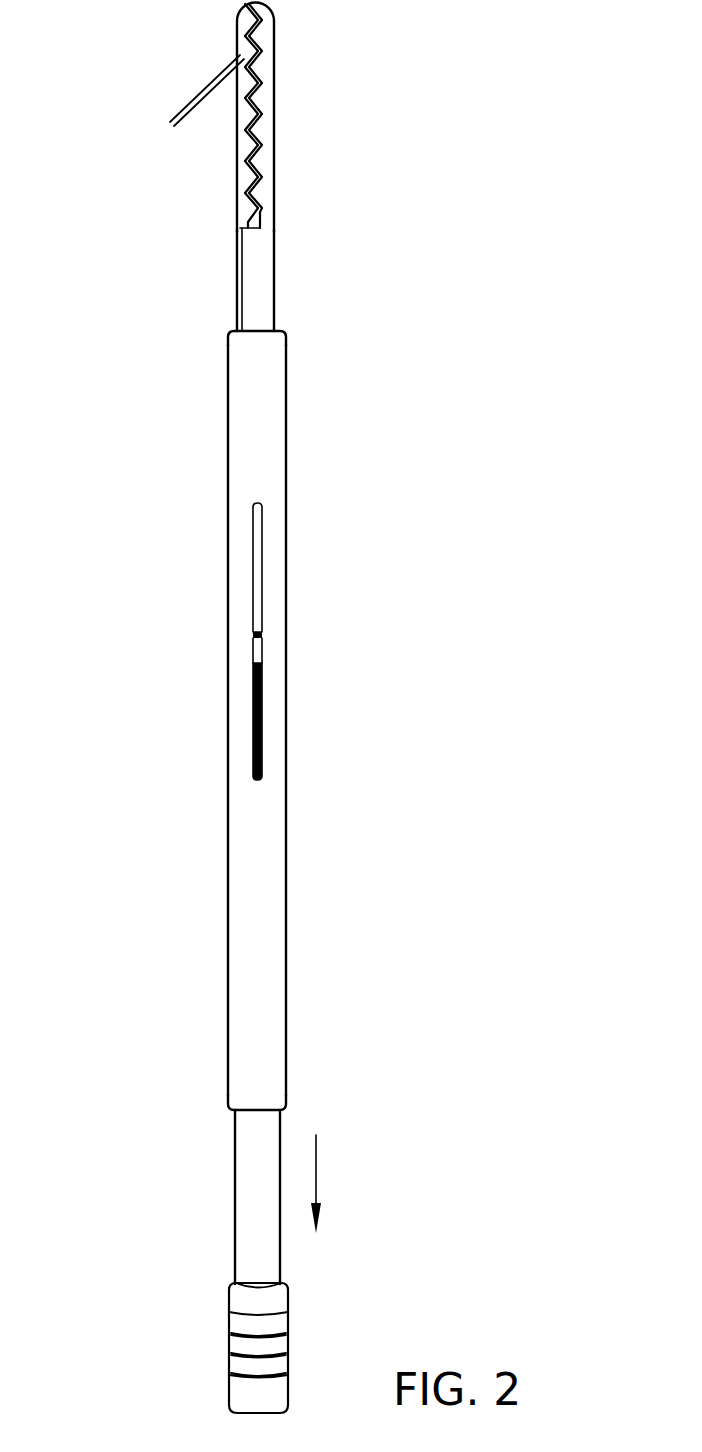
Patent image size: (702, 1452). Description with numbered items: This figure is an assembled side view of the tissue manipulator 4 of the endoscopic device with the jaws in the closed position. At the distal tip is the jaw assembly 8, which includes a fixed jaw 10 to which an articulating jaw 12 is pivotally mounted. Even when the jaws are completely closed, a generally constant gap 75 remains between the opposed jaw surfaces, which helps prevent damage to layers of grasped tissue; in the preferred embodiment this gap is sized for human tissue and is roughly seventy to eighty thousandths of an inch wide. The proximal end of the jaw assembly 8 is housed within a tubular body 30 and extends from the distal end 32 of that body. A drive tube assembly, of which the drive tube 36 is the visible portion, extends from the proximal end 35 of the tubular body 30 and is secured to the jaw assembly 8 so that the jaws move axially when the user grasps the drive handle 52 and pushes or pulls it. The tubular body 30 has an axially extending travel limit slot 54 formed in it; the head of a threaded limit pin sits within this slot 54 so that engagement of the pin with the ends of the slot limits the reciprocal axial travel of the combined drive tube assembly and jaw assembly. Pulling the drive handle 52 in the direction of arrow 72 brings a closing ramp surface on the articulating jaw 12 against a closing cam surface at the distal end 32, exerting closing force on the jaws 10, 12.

The tissue manipulator 4 is at (346, 510).
The jaw assembly 8 is at (289, 120).
The fixed jaw 10 is at (284, 276).
The articulating jaw 12 is at (235, 203).
The tubular body 30 is at (300, 449).
The distal end of the tubular body 32 is at (228, 384).
The proximal end of the tubular body 35 is at (228, 1078).
The drive tube 36 is at (235, 1180).
The drive handle 52 is at (287, 1320).
The travel limit slot 54 is at (262, 682).
The arrow 72 is at (320, 1185).
The gap 75 is at (220, 150).